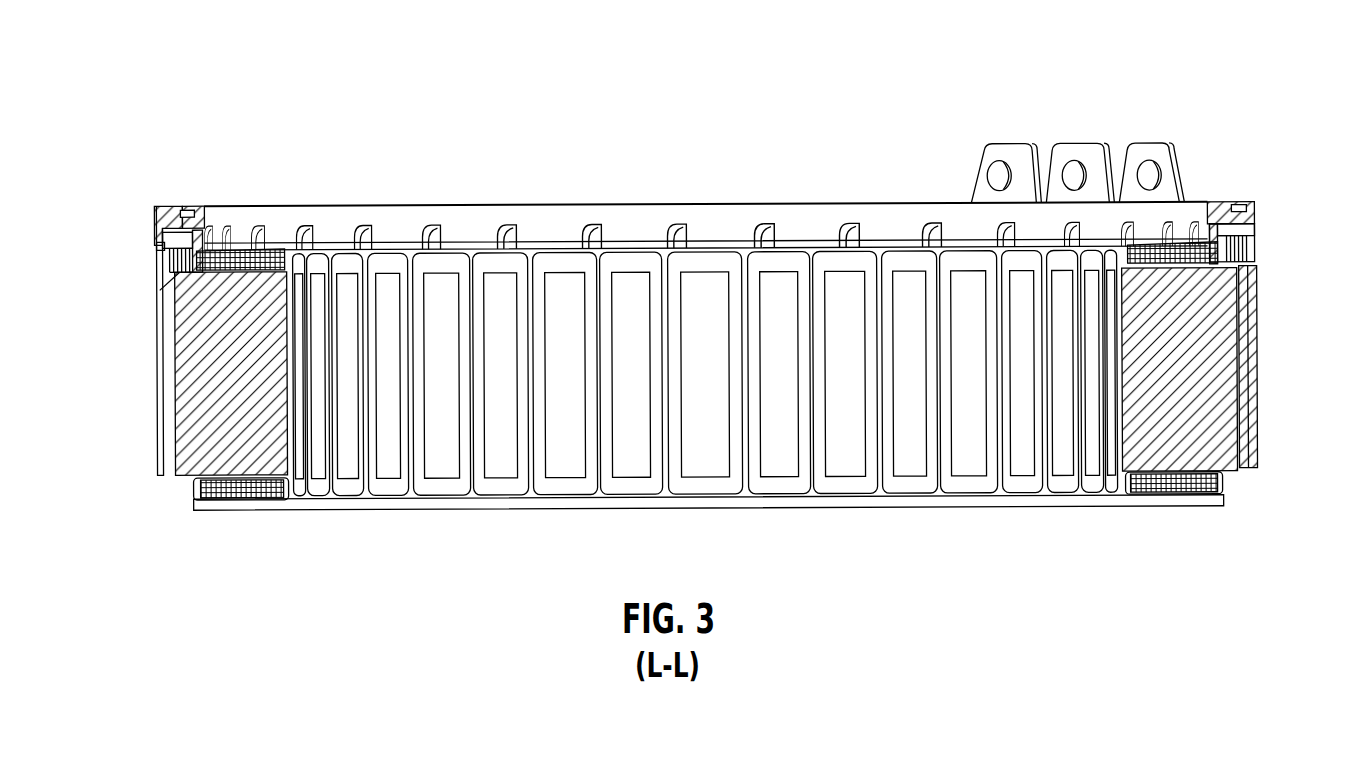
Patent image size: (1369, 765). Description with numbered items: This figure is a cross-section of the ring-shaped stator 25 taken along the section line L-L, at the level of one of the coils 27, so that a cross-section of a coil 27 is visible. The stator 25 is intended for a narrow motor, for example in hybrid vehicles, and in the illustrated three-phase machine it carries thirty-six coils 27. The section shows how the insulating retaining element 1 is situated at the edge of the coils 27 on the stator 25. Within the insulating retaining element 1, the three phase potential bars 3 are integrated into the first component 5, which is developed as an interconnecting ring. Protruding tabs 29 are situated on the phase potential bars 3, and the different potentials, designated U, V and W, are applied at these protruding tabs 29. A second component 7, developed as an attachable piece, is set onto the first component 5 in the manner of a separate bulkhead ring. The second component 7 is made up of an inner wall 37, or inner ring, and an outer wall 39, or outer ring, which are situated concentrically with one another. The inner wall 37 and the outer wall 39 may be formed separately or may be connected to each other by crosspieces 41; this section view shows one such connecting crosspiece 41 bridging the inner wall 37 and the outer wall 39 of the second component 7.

The insulating retaining element 1 is at (140, 218).
The phase potential bars 3 is at (170, 268).
The first component 5 is at (1253, 250).
The second component 7 is at (1256, 212).
The stator 25 is at (1280, 84).
The coils 27 is at (247, 270).
The protruding tabs 29 is at (1140, 152).
The inner wall 37 is at (202, 204).
The outer wall 39 is at (157, 204).
The crosspieces 41 is at (182, 208).